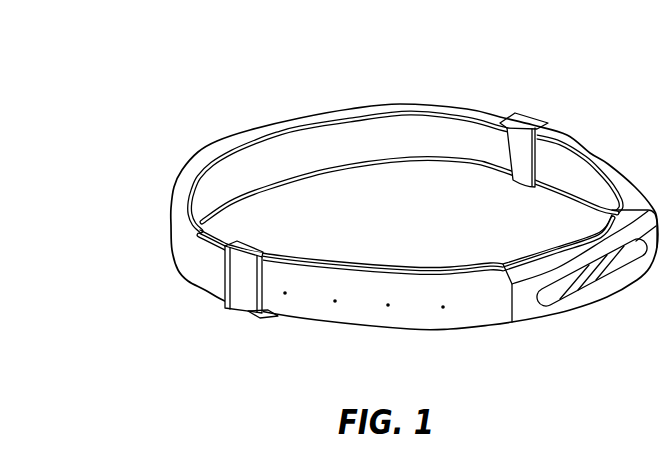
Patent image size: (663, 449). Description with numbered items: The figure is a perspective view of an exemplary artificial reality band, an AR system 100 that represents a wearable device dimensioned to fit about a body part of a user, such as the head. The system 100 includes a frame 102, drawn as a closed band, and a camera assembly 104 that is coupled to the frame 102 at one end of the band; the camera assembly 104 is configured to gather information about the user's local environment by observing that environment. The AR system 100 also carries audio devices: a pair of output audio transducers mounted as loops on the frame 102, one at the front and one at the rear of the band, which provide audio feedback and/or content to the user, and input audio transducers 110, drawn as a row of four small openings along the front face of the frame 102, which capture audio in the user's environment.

The AR system 100 is at (122, 88).
The frame 102 is at (388, 103).
The camera assembly 104 is at (592, 301).
The input audio transducers 110 is at (443, 335).